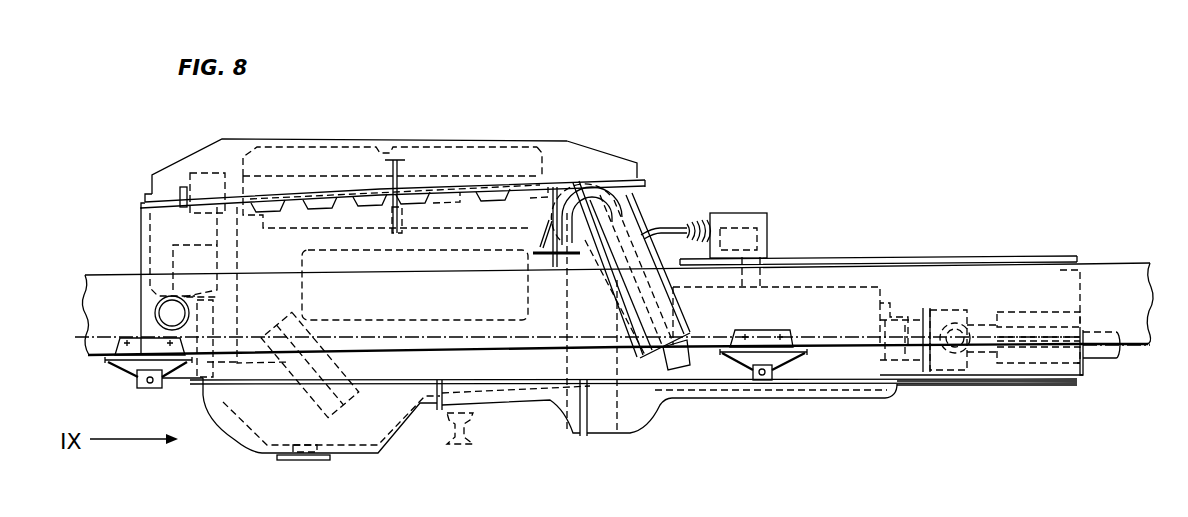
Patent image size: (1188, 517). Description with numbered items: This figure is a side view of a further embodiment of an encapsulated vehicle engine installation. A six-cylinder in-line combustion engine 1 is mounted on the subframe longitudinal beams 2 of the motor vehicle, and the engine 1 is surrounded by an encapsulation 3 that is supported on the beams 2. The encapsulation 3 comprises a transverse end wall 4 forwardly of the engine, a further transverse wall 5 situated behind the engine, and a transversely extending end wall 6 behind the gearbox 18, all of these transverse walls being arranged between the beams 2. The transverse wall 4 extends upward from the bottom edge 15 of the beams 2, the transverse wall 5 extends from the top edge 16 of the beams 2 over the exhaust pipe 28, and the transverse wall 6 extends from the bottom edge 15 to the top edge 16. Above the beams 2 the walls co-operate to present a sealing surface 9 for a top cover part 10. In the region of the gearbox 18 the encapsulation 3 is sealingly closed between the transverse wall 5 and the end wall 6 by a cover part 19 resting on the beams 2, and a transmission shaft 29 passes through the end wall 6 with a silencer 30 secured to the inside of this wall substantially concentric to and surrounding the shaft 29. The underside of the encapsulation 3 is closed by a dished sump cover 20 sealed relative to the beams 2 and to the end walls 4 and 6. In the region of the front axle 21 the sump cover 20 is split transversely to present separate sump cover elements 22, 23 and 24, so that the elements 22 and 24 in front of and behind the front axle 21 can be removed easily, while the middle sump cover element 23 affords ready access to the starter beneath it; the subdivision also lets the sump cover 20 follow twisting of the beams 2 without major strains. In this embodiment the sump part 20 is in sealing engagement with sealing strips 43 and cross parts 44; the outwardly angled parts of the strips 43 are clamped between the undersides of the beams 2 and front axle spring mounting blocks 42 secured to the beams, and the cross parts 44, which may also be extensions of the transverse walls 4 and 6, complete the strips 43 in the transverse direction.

The combustion engine 1 is at (414, 240).
The subframe longitudinal beam 2 is at (101, 283).
The encapsulation 3 is at (352, 136).
The transverse end wall 4 is at (140, 221).
The transverse wall 5 is at (647, 208).
The transverse end wall 6 is at (1080, 282).
The sealing surface 9 is at (544, 184).
The top cover part 10 is at (583, 155).
The bottom edge 15 is at (1146, 346).
The top edge 16 is at (1117, 263).
The gearbox 18 is at (850, 300).
The cover part 19 is at (927, 262).
The sump cover 20 is at (233, 449).
The front axle 21 is at (468, 442).
The sump cover element 22 is at (368, 440).
The middle sump cover element 23 is at (527, 398).
The sump cover element 24 is at (750, 396).
The exhaust pipe 28 is at (661, 361).
The transmission shaft 29 is at (1057, 354).
The silencer 30 is at (1013, 371).
The front axle spring mounting block 42 is at (131, 364).
The sealing strip 43 is at (863, 364).
The cross part 44 is at (168, 381).